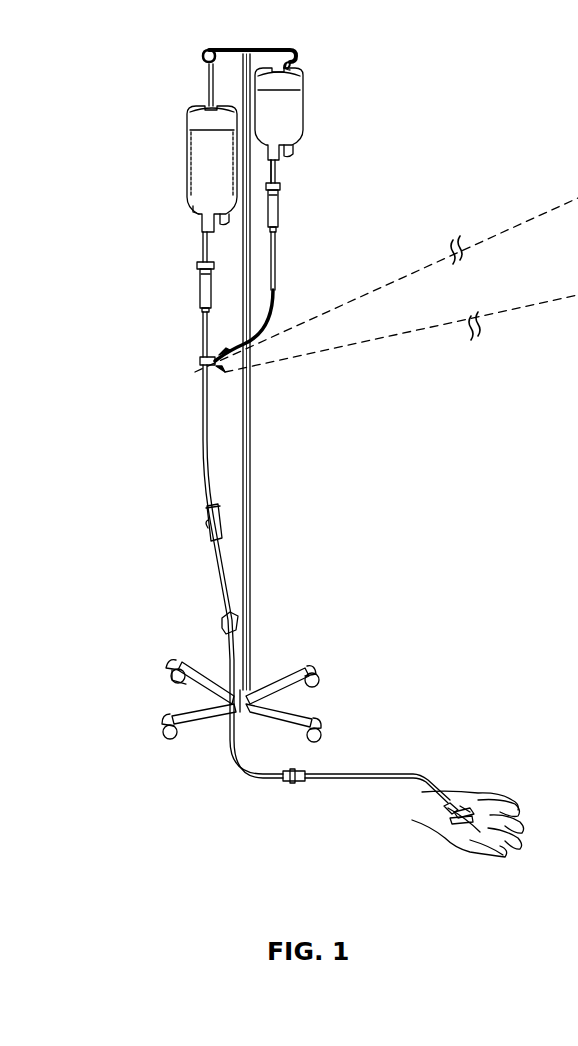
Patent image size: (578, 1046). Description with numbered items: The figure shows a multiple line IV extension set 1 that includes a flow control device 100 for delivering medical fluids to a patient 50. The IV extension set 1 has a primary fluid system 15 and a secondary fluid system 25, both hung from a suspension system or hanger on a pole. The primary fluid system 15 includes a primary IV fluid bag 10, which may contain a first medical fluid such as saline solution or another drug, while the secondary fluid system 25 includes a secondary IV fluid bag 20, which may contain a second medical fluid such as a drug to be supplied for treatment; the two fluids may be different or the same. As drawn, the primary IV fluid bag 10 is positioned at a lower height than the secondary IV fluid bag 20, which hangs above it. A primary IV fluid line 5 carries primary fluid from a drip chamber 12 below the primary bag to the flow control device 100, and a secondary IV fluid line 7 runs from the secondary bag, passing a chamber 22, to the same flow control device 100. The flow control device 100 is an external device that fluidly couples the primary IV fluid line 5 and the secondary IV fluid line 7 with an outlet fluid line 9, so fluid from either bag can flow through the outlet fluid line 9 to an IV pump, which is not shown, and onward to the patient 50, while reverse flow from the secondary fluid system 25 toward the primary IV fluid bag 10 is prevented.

The multiple line IV extension set 1 is at (153, 76).
The primary intravenous (IV) fluid bag 10 is at (197, 150).
The secondary IV fluid bag 20 is at (297, 105).
The secondary fluid system 25 is at (337, 137).
The primary fluid system 15 is at (175, 250).
The drip chamber 12 is at (202, 297).
The primary IV fluid line 5 is at (202, 330).
The flow control device 100 is at (187, 363).
The outlet fluid line 9 is at (205, 397).
The secondary drip chamber 22 is at (278, 205).
The secondary IV fluid line 7 is at (276, 255).
The patient 50 is at (457, 788).